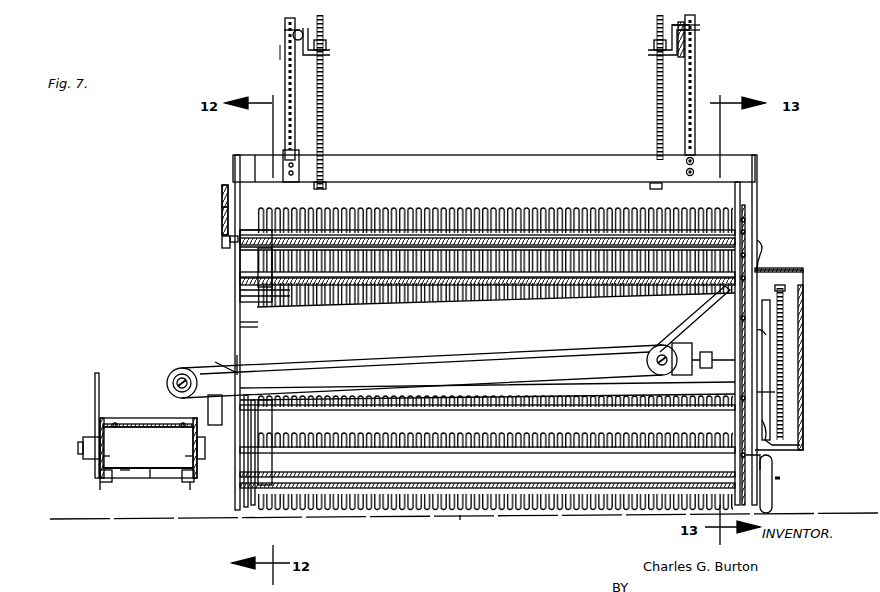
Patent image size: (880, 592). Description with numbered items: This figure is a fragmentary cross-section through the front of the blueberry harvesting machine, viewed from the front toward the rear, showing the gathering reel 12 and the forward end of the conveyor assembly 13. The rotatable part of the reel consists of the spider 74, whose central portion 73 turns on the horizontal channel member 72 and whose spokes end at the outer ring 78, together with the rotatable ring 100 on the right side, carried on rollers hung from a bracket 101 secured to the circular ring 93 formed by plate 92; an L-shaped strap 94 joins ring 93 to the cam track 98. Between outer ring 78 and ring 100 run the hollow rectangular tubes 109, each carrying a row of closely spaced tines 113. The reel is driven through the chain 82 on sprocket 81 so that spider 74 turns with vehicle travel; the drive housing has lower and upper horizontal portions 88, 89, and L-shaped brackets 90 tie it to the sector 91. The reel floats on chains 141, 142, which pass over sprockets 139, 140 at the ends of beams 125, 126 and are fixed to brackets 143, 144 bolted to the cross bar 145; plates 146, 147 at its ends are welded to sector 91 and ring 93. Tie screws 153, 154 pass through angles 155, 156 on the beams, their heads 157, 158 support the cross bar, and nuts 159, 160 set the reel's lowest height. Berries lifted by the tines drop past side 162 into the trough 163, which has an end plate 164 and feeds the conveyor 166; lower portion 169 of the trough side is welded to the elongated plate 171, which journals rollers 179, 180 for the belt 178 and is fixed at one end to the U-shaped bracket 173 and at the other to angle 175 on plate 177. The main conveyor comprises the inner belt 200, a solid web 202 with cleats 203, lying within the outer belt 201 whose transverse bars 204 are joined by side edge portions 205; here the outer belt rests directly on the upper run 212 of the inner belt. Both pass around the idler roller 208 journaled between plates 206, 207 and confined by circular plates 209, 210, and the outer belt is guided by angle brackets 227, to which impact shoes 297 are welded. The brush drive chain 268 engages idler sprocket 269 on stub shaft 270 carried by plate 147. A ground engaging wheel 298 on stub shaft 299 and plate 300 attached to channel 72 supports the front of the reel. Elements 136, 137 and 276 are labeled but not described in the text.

The blueberry gathering reel 12 is at (462, 522).
The conveyor assembly 13 is at (92, 378).
The horizontal channel member 72 is at (770, 332).
The central portion of spider 73 is at (777, 392).
The spider 74 is at (747, 216).
The outer ring of spider 78 is at (757, 226).
The sprocket 81 is at (805, 380).
The chain 82 is at (786, 292).
The lower horizontal portion of housing 88 is at (803, 445).
The upper horizontal portion of housing 89 is at (790, 270).
The L-shaped brackets 90 is at (768, 268).
The sector 91 is at (758, 250).
The plate 92 is at (254, 273).
The circular ring 93 is at (237, 360).
The L-shaped strap 94 is at (244, 297).
The cam track 98 is at (244, 258).
The rotatable ring 100 is at (258, 490).
The bracket 101 is at (246, 490).
The hollow rectangular tube 109 is at (455, 240).
The tines 113 is at (546, 212).
The beam 125 is at (700, 22).
The beam 126 is at (292, 22).
The bracket 136 is at (700, 30).
The bracket 137 is at (284, 30).
The sprocket 139 is at (697, 55).
The sprocket 140 is at (286, 50).
The chain 141 is at (696, 72).
The chain 142 is at (286, 80).
The bracket 143 is at (696, 155).
The bracket 144 is at (284, 162).
The cross bar 145 is at (412, 157).
The plate 146 is at (758, 160).
The plate 147 is at (234, 163).
The tie screw 153 is at (657, 82).
The tie screw 154 is at (324, 87).
The angle 155 is at (650, 52).
The angle 156 is at (330, 54).
The head 157 is at (650, 186).
The head 158 is at (328, 188).
The nut 159 is at (655, 42).
The nut 160 is at (326, 44).
The side of trough 162 is at (258, 327).
The trough 163 is at (262, 322).
The end plate 164 is at (700, 292).
The conveyor 166 is at (215, 365).
The lower vertical portion 169 is at (437, 358).
The elongated plate 171 is at (195, 378).
The U-shaped bracket 173 is at (680, 343).
The angle 175 is at (225, 400).
The plate 177 is at (210, 412).
The belt 178 is at (378, 360).
The roller 179 is at (648, 362).
The roller 180 is at (170, 372).
The inner belt 200 is at (120, 478).
The outer belt 201 is at (140, 482).
The continuous solid web 202 is at (105, 420).
The cleats 203 is at (125, 424).
The transverse bars 204 is at (155, 478).
The articulated side edge portions 205 is at (108, 420).
The plate 206 is at (95, 462).
The plate 207 is at (200, 460).
The idler roller 208 is at (148, 447).
The circular plate 209 is at (119, 455).
The circular plate 210 is at (174, 455).
The upper run of belt 212 is at (142, 425).
The angle brackets 227 is at (102, 482).
The chain 268 is at (222, 190).
The idler sprocket 269 is at (222, 216).
The stub shaft 270 is at (222, 200).
The nut 276 is at (228, 240).
The impact shoes 297 is at (102, 490).
The ground engaging wheel 298 is at (772, 503).
The stub shaft 299 is at (775, 478).
The plate 300 is at (772, 457).